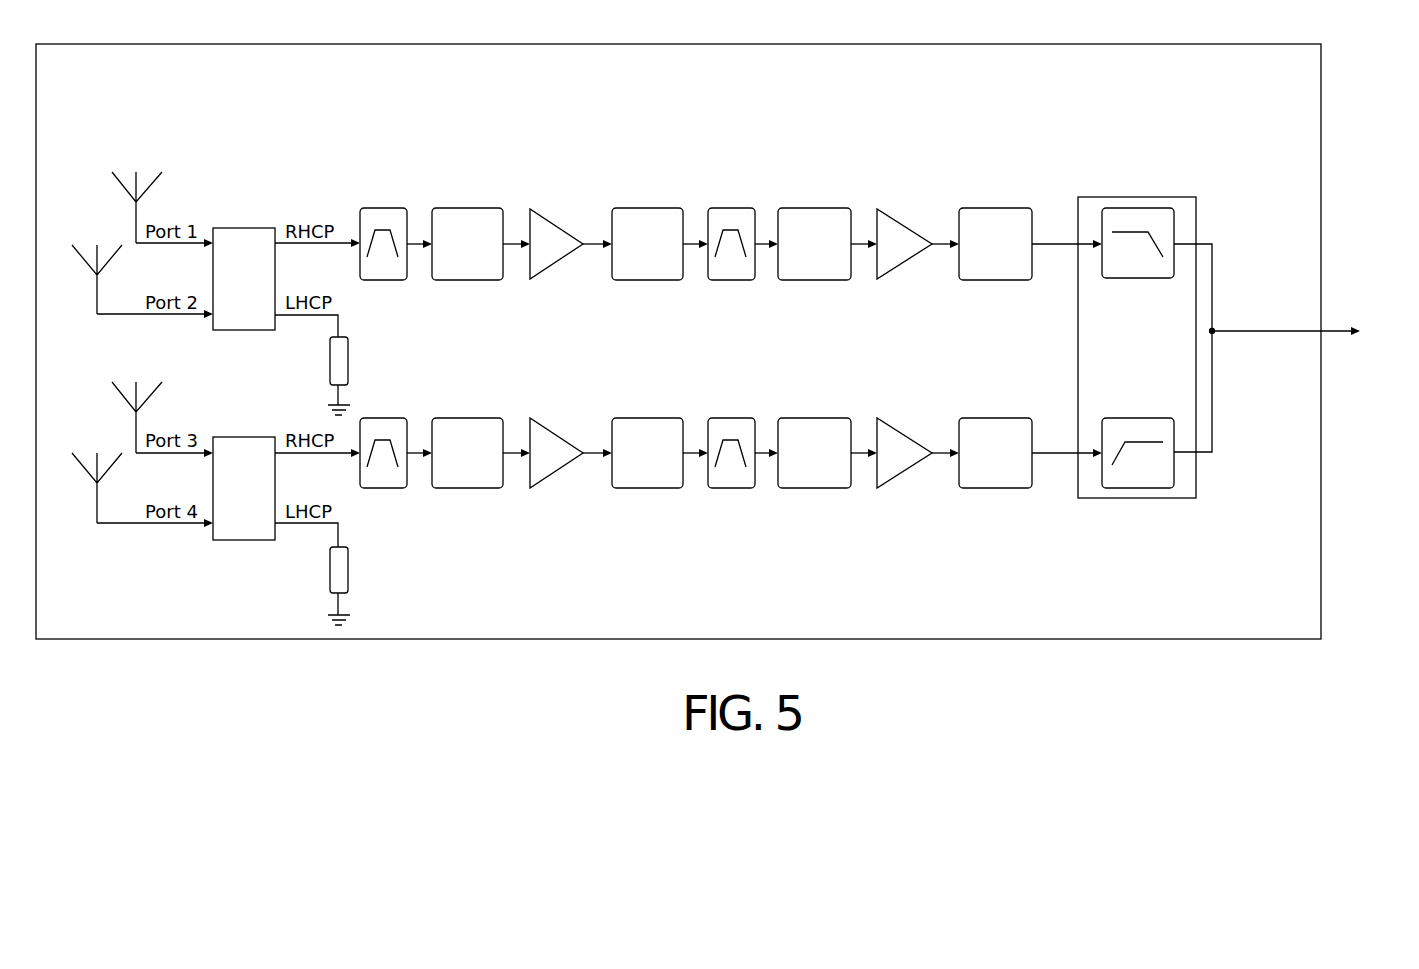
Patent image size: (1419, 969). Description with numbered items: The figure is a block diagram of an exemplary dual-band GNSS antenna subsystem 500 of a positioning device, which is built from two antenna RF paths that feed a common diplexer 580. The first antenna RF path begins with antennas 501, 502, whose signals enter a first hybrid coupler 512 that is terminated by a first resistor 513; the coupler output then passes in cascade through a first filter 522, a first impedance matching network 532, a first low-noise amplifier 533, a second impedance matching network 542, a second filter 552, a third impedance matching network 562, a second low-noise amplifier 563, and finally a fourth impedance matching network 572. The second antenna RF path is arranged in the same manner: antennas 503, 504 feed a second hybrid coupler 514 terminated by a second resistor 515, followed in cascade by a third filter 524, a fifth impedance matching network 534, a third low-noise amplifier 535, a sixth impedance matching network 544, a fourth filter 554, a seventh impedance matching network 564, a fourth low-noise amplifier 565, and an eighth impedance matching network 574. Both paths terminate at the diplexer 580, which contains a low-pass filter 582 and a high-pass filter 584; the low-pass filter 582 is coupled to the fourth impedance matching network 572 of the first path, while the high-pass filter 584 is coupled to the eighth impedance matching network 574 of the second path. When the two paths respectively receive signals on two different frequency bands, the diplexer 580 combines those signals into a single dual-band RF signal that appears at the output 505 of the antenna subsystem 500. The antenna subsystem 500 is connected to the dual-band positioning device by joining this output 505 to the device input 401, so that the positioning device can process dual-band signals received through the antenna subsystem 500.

The antenna subsystem 500 is at (675, 44).
The antenna 501 is at (135, 180).
The antenna 502 is at (96, 248).
The antenna 503 is at (135, 388).
The antenna 504 is at (96, 458).
The first hybrid coupler 512 is at (243, 228).
The first resistor 513 is at (349, 343).
The second hybrid coupler 514 is at (243, 437).
The second resistor 515 is at (349, 588).
The first filter 522 is at (382, 208).
The third filter 524 is at (383, 489).
The first impedance matching network 532 is at (468, 208).
The first low-noise amplifier 533 is at (557, 220).
The fifth impedance matching network 534 is at (468, 418).
The third low-noise amplifier 535 is at (557, 430).
The second impedance matching network 542 is at (646, 208).
The sixth impedance matching network 544 is at (646, 418).
The second filter 552 is at (728, 208).
The fourth filter 554 is at (728, 418).
The third impedance matching network 562 is at (815, 208).
The second low-noise amplifier 563 is at (907, 220).
The seventh impedance matching network 564 is at (815, 418).
The fourth low-noise amplifier 565 is at (907, 430).
The fourth impedance matching network 572 is at (995, 208).
The eighth impedance matching network 574 is at (995, 418).
The diplexer 580 is at (1137, 314).
The low-pass filter 582 is at (1112, 279).
The high-pass filter 584 is at (1112, 418).
The output 505 is at (1238, 330).
The input 401 is at (1380, 330).